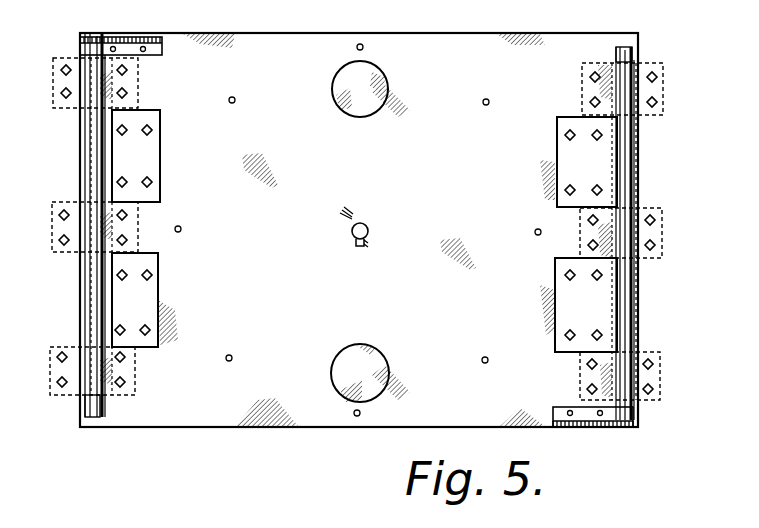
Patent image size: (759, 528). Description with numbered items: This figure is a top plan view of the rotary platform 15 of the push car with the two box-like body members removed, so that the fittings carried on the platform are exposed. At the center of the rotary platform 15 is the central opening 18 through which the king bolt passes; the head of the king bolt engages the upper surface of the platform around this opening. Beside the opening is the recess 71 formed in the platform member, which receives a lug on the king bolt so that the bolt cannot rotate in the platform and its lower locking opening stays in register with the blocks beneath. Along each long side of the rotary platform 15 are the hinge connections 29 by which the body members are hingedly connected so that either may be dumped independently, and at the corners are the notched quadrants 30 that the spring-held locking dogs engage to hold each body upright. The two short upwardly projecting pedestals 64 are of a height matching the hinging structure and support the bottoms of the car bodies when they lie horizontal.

The rotary platform 15 is at (268, 282).
The central opening 18 is at (367, 226).
The hinge connection 29 is at (86, 412).
The notched quadrant 30 is at (140, 37).
The pedestal 64 is at (348, 80).
The recess 71 is at (360, 247).